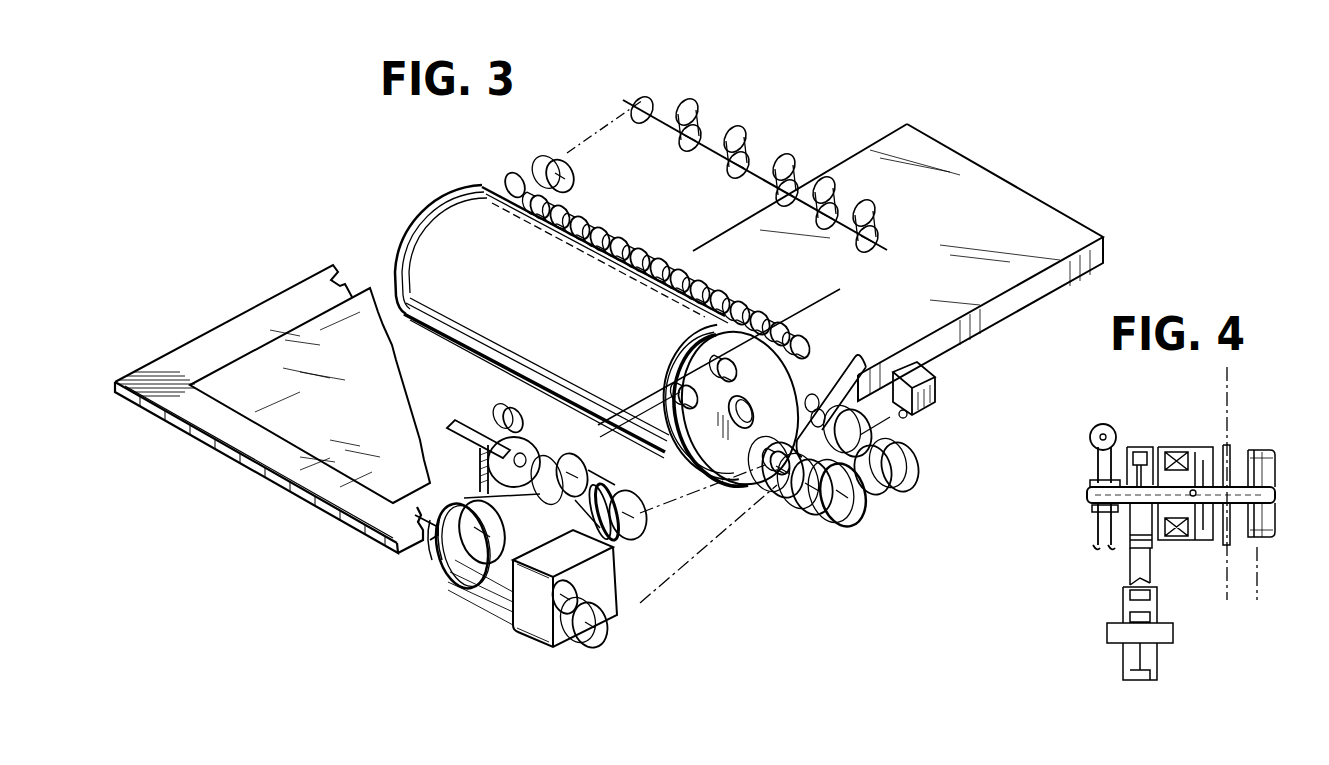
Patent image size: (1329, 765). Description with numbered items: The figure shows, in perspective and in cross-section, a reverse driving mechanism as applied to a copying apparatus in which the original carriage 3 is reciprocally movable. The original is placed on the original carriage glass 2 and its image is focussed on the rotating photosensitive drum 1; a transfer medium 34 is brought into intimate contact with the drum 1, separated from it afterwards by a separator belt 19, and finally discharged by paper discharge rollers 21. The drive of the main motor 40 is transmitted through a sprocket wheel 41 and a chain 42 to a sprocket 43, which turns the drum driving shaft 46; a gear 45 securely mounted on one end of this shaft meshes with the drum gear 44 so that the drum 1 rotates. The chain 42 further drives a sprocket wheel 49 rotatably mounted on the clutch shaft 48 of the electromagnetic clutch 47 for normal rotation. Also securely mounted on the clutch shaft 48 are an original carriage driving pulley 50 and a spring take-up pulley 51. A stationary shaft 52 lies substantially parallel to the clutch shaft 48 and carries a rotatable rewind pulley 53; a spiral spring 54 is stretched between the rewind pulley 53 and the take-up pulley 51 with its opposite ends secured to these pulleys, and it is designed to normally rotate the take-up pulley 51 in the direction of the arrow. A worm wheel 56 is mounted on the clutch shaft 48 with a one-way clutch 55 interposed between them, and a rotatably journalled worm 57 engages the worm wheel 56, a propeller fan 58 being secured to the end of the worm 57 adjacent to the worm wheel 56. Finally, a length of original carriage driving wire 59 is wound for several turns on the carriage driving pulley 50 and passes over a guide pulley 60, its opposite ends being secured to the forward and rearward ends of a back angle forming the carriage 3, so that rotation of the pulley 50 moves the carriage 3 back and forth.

In FIG. 3, the drum 1 is at (440, 225).
In FIG. 3, the original carriage glass 2 is at (287, 352).
In FIG. 3, the original carriage 3 is at (290, 470).
In FIG. 3, the separator belt 19 is at (540, 165).
In FIG. 3, the paper discharge rollers 21 is at (745, 150).
In FIG. 3, the transfer medium 34 is at (983, 185).
In FIG. 3, the main motor 40 is at (483, 590).
In FIG. 3, the sprocket wheel 41 is at (588, 642).
In FIG. 3, the chain 42 is at (692, 565).
In FIG. 4, the chain 42 is at (1232, 385).
In FIG. 3, the sprocket 43 is at (786, 494).
In FIG. 3, the drum gear 44 is at (730, 475).
In FIG. 3, the gear 45 is at (767, 492).
In FIG. 3, the drum driving shaft 46 is at (843, 512).
In FIG. 3, the electromagnetic clutch 47 is at (565, 500).
In FIG. 4, the electromagnetic clutch 47 is at (1192, 478).
In FIG. 3, the clutch shaft 48 is at (620, 528).
In FIG. 4, the clutch shaft 48 is at (1260, 490).
In FIG. 3, the sprocket wheel 49 is at (606, 533).
In FIG. 4, the sprocket wheel 49 is at (1228, 455).
In FIG. 3, the original carriage driving pulley 50 is at (638, 503).
In FIG. 4, the original carriage driving pulley 50 is at (1262, 540).
In FIG. 3, the spring take-up pulley 51 is at (488, 530).
In FIG. 4, the spring take-up pulley 51 is at (1137, 450).
In FIG. 3, the stationary shaft 52 is at (414, 519).
In FIG. 3, the rewind pulley 53 is at (462, 584).
In FIG. 4, the rewind pulley 53 is at (1130, 658).
In FIG. 3, the spiral spring 54 is at (478, 470).
In FIG. 4, the spiral spring 54 is at (1135, 570).
In FIG. 4, the one-way clutch 55 is at (1092, 511).
In FIG. 3, the worm wheel 56 is at (530, 443).
In FIG. 4, the worm wheel 56 is at (1095, 458).
In FIG. 3, the worm 57 is at (506, 420).
In FIG. 4, the worm 57 is at (1092, 432).
In FIG. 3, the propeller fan 58 is at (470, 425).
In FIG. 3, the original carriage driving wire 59 is at (842, 292).
In FIG. 3, the guide pulley 60 is at (717, 358).